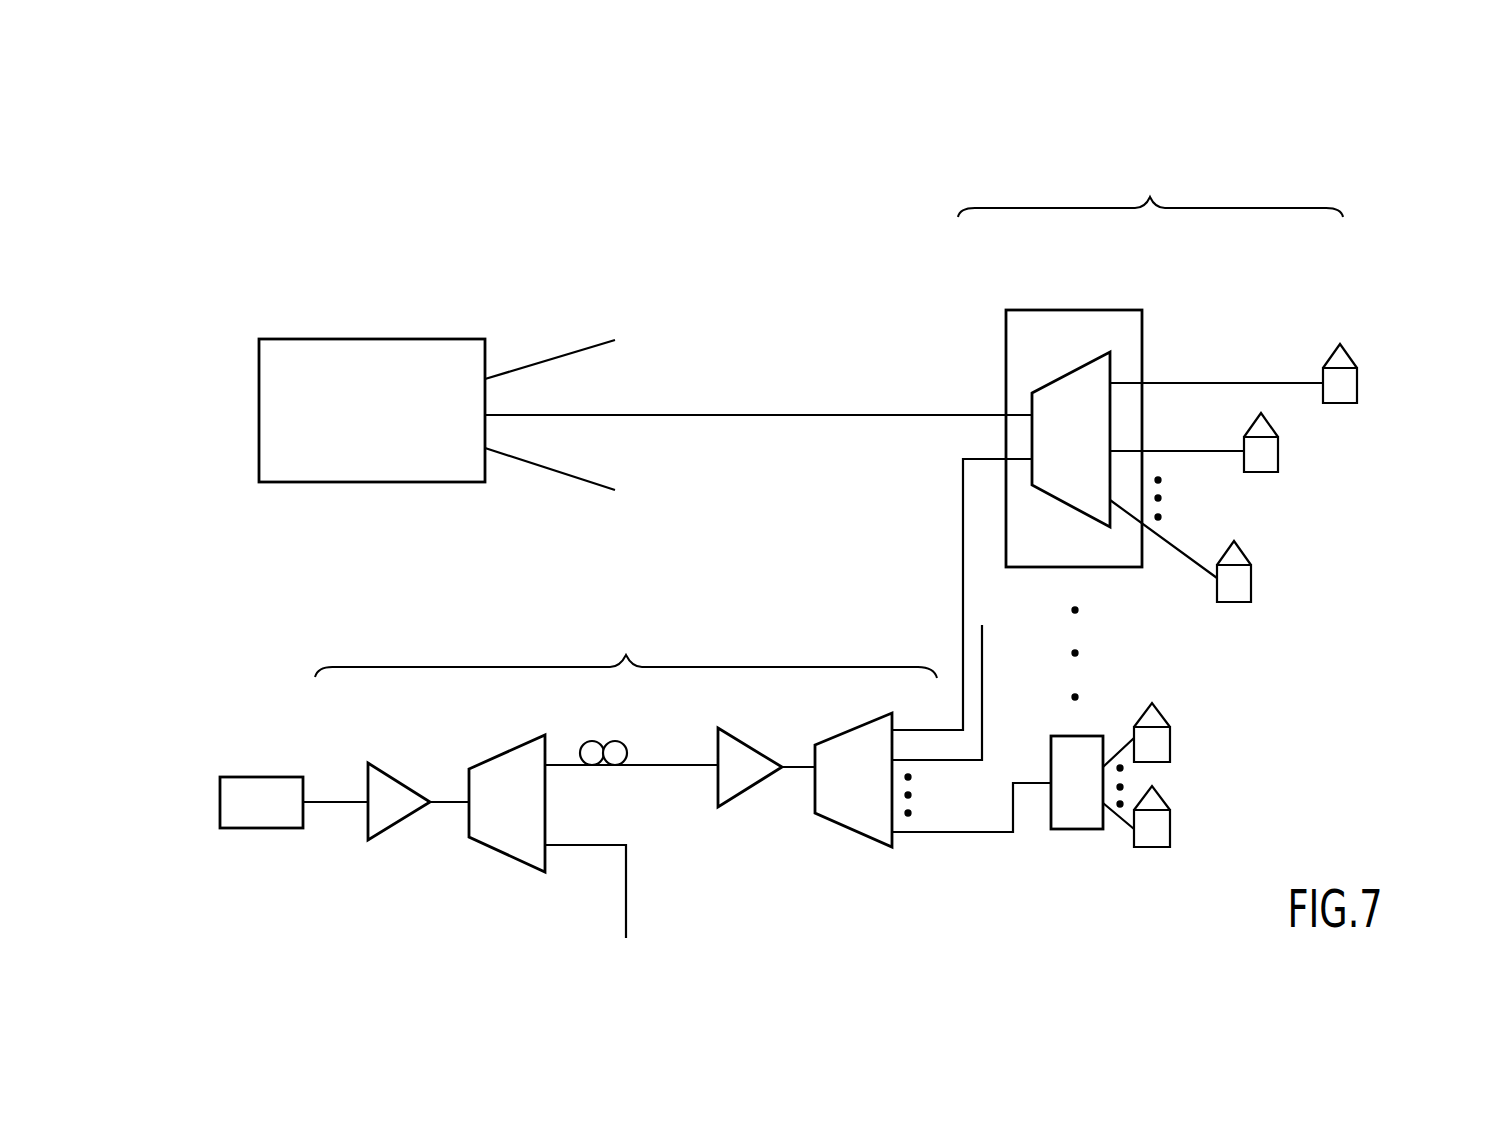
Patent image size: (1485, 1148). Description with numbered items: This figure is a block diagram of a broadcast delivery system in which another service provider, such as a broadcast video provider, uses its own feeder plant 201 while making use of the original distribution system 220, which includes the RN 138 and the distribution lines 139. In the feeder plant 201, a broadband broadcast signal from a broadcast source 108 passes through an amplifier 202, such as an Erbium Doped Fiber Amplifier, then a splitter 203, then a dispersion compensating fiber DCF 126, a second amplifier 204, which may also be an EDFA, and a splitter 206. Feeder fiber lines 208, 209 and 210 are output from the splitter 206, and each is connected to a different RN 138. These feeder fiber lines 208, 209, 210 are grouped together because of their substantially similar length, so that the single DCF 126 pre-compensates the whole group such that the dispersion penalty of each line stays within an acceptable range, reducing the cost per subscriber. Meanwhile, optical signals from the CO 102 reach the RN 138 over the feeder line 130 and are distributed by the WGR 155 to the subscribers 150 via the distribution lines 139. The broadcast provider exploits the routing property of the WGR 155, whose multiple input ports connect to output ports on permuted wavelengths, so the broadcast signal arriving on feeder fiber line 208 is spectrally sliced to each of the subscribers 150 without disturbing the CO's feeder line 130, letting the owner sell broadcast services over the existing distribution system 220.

The CO 102 is at (372, 339).
The feeder line 130 is at (781, 414).
The RN 138 is at (1100, 310).
The WGR 155 is at (1072, 513).
The distribution lines 139 is at (1186, 595).
The subscribers 150 is at (1358, 386).
The distribution system 220 is at (1150, 173).
The broadcast source (B/C) 108 is at (258, 777).
The amplifier 202 is at (385, 833).
The splitter 203 is at (515, 866).
The DCF1 126 is at (628, 752).
The amplifier 204 is at (749, 745).
The splitter 206 is at (850, 839).
The feeder fiber line 208 is at (962, 592).
The feeder fiber line 209 is at (982, 690).
The feeder fiber line 210 is at (970, 833).
The feeder plant 201 is at (626, 620).